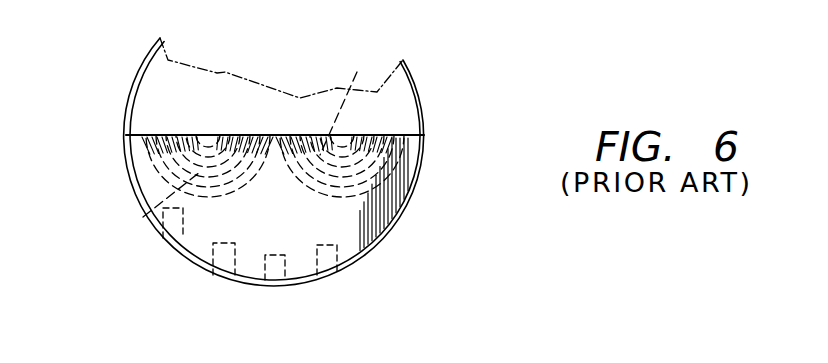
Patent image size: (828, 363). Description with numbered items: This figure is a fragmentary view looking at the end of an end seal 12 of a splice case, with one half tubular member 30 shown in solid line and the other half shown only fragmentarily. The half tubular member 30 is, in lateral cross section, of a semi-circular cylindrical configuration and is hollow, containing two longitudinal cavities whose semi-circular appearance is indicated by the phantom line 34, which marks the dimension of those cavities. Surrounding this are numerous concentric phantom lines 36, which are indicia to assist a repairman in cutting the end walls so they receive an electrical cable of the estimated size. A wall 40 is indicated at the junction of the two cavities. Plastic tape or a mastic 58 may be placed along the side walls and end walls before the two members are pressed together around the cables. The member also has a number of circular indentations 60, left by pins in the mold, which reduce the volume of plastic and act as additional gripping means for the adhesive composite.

The end seal 12 is at (433, 86).
The half tubular member 30 is at (412, 58).
The phantom line 34 is at (204, 202).
The concentric phantom lines 36 is at (357, 72).
The wall 40 is at (275, 133).
The mastic 58 is at (125, 135).
The circular indentations 60 is at (226, 278).